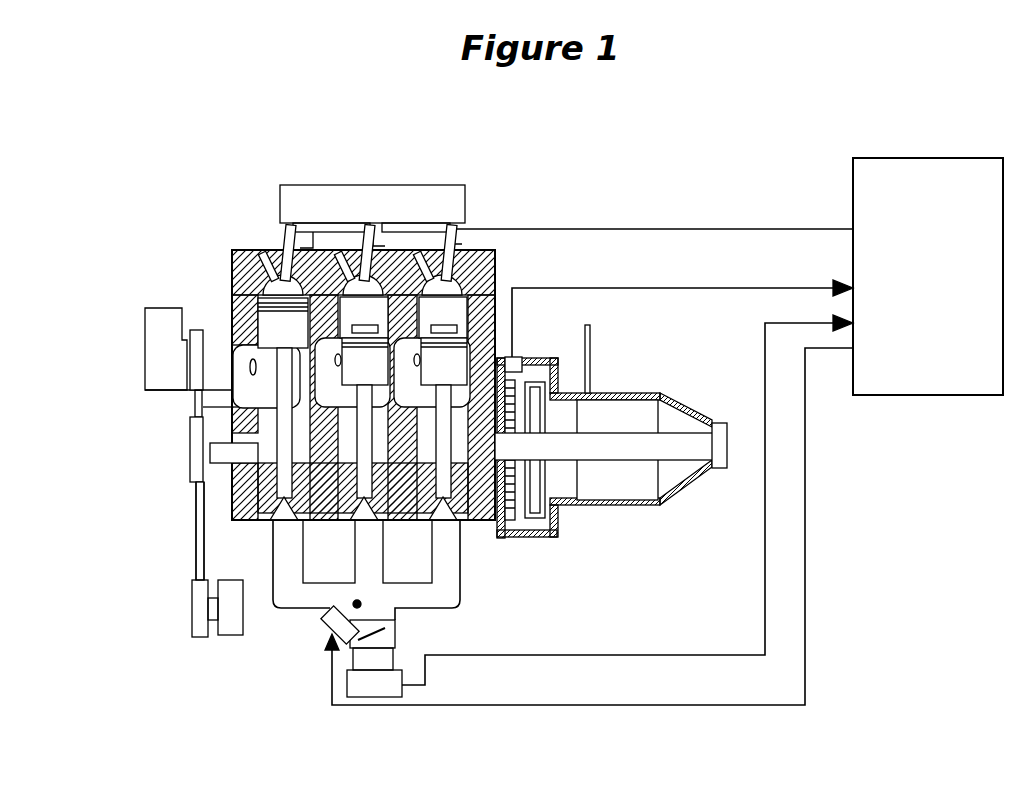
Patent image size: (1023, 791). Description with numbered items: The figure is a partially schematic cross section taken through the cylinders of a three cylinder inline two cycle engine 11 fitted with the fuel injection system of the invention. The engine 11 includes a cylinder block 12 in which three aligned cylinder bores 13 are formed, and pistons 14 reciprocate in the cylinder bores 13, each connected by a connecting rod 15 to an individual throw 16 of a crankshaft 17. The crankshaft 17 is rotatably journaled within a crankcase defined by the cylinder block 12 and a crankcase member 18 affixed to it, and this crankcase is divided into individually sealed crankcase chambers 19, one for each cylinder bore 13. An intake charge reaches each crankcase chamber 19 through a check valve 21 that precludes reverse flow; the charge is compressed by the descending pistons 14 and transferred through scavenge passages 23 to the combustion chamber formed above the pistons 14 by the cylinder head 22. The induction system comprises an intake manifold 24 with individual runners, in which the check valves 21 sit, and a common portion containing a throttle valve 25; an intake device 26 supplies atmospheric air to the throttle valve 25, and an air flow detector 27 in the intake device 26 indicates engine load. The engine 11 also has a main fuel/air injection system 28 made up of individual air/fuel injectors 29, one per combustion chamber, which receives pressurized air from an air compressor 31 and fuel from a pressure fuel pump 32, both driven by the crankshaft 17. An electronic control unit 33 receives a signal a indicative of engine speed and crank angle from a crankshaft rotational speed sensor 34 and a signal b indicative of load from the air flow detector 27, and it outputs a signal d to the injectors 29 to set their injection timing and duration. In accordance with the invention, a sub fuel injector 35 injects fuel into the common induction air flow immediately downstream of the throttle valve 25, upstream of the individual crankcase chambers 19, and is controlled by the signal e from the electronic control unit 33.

The engine 11 is at (205, 246).
The cylinder block 12 is at (232, 297).
The cylinder bores 13 is at (256, 334).
The pistons 14 is at (256, 304).
The connecting rods 15 is at (232, 392).
The throws 16 is at (257, 440).
The crankshaft 17 is at (230, 498).
The crankcase member 18 is at (197, 517).
The crankcase chambers 19 is at (270, 512).
The check valves 21 is at (452, 525).
The cylinder head 22 is at (248, 250).
The scavenge passages 23 is at (190, 383).
The intake manifold 24 is at (462, 590).
The throttle valve 25 is at (404, 615).
The intake device 26 is at (396, 654).
The air flow detector 27 is at (402, 692).
The main fuel/air injection system 28 is at (366, 178).
The air/fuel injectors 29 is at (266, 232).
The air compressor 31 is at (145, 328).
The pressure fuel pump 32 is at (225, 635).
The electronic control unit 33 is at (895, 158).
The crankshaft rotational speed sensor 34 is at (520, 355).
The sub fuel injector 35 is at (322, 630).
The signal a is at (617, 288).
The signal b is at (625, 655).
The signal d is at (615, 229).
The signal e is at (634, 705).